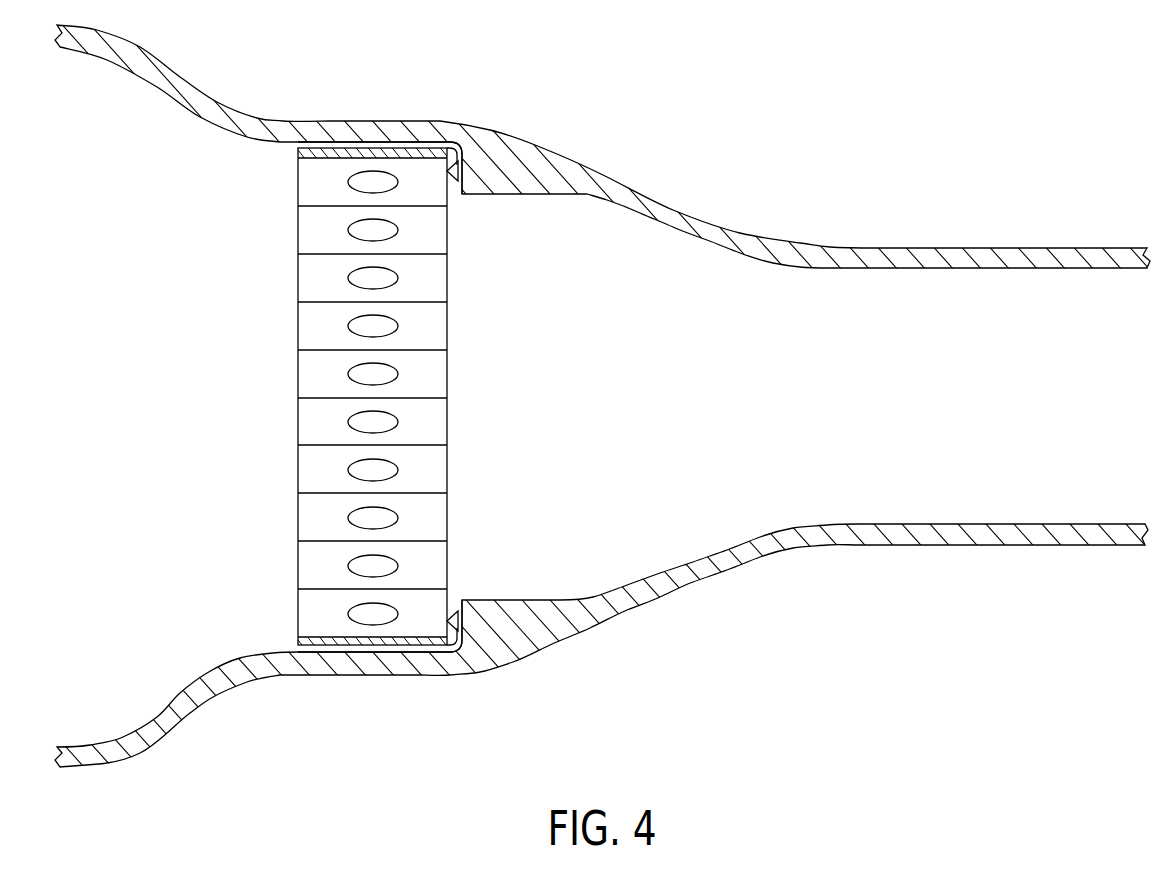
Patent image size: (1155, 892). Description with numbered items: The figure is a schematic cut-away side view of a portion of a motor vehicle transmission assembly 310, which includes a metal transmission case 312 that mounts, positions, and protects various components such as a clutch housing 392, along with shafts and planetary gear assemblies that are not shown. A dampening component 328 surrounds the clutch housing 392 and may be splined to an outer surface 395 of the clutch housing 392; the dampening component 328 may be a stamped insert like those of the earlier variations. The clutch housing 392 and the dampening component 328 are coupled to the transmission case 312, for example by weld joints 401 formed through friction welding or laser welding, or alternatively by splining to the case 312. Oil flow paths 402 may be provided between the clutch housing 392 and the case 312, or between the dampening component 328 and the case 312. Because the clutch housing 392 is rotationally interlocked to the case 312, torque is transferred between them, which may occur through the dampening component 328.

The transmission assembly 310 is at (577, 446).
The transmission case 312 is at (240, 121).
The dampening component 328 is at (330, 156).
The clutch housing 392 is at (336, 361).
The outer surface 395 is at (418, 185).
The weld joints 401 is at (458, 172).
The oil flow paths 402 is at (410, 145).